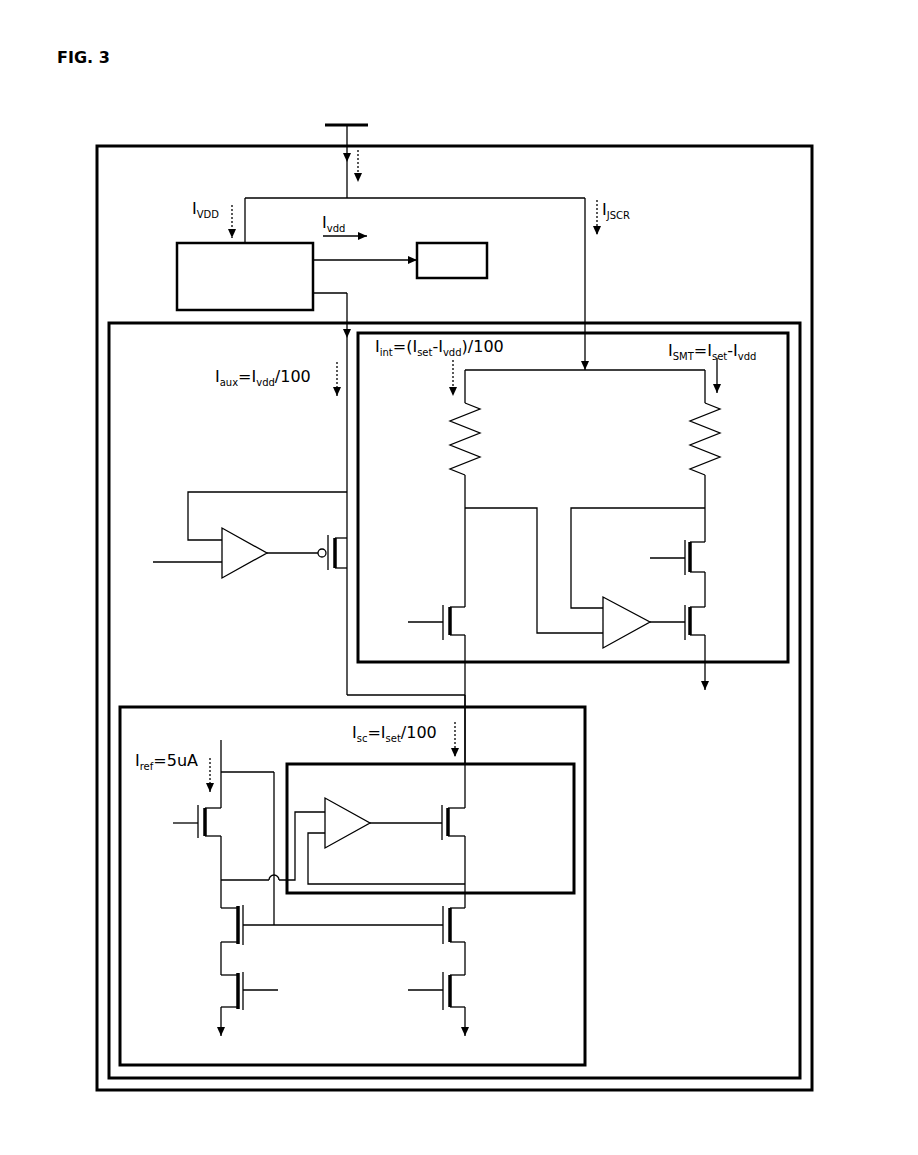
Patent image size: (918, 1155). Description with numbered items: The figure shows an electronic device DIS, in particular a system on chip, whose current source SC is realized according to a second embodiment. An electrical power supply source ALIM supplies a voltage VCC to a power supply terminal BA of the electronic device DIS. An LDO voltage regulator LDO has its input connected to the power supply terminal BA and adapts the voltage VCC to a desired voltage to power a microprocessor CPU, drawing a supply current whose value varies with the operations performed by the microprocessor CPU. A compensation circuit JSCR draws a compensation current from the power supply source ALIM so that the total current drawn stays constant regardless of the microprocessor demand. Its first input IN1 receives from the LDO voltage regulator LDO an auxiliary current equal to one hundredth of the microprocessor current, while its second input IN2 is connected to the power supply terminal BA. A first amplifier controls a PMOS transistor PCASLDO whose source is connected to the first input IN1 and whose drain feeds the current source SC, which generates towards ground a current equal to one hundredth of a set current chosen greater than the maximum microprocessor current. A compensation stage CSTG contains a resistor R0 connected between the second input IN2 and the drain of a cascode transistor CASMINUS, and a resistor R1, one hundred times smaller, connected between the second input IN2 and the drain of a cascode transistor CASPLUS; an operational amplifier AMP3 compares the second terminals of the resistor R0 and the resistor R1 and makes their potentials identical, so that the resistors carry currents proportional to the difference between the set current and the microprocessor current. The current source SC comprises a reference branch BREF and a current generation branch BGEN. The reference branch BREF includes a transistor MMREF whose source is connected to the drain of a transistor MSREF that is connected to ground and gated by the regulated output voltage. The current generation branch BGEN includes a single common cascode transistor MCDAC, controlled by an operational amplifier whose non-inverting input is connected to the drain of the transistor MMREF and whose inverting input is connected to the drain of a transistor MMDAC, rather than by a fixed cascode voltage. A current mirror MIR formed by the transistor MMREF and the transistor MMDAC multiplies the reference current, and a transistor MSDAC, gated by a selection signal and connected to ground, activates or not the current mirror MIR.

The electrical power supply source ALIM is at (316, 132).
The voltage VCC is at (347, 151).
The power supply terminal BA is at (391, 166).
The electronic device DIS is at (795, 176).
The LDO voltage regulator LDO is at (245, 276).
The microprocessor CPU is at (472, 272).
The first input IN1 is at (389, 494).
The second input IN2 is at (585, 297).
The compensation circuit JSCR is at (454, 700).
The compensation stage CSTG is at (780, 656).
The resistor R0 is at (450, 488).
The resistor R1 is at (650, 456).
The NMOS-type transistor CASPLUS is at (638, 558).
The operational amplifier AMP3 is at (654, 646).
The NMOS-type transistor CASMINUS is at (413, 691).
The PMOS-type transistor PCASLDO is at (297, 568).
The current source SC is at (160, 737).
The reference branch BREF is at (236, 767).
The current generation branch BGEN is at (484, 762).
The cascode transistor MCDAC is at (487, 856).
The NMOS-type transistor MMREF is at (200, 940).
The transistor MSREF is at (224, 1018).
The current mirror MIR is at (314, 932).
The NMOS-type transistor MMDAC is at (511, 940).
The NMOS-type transistor MSDAC is at (466, 1018).